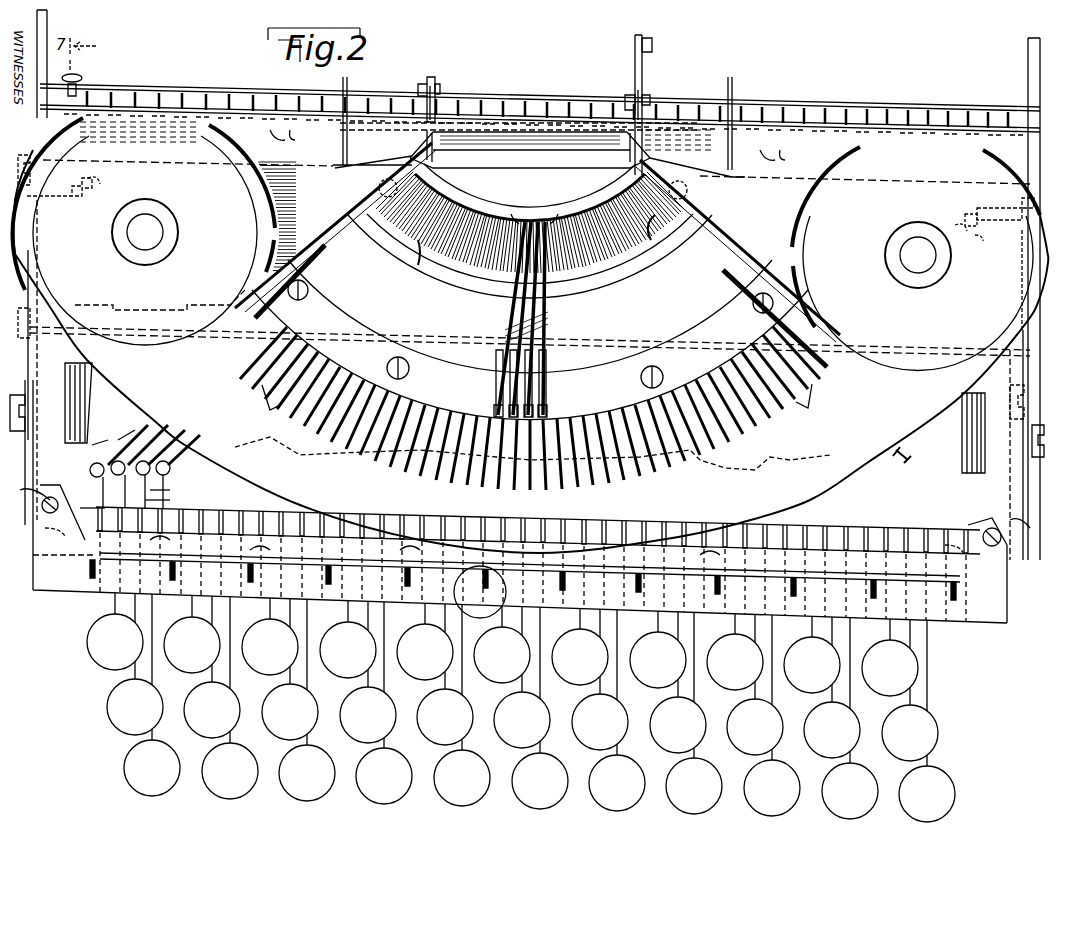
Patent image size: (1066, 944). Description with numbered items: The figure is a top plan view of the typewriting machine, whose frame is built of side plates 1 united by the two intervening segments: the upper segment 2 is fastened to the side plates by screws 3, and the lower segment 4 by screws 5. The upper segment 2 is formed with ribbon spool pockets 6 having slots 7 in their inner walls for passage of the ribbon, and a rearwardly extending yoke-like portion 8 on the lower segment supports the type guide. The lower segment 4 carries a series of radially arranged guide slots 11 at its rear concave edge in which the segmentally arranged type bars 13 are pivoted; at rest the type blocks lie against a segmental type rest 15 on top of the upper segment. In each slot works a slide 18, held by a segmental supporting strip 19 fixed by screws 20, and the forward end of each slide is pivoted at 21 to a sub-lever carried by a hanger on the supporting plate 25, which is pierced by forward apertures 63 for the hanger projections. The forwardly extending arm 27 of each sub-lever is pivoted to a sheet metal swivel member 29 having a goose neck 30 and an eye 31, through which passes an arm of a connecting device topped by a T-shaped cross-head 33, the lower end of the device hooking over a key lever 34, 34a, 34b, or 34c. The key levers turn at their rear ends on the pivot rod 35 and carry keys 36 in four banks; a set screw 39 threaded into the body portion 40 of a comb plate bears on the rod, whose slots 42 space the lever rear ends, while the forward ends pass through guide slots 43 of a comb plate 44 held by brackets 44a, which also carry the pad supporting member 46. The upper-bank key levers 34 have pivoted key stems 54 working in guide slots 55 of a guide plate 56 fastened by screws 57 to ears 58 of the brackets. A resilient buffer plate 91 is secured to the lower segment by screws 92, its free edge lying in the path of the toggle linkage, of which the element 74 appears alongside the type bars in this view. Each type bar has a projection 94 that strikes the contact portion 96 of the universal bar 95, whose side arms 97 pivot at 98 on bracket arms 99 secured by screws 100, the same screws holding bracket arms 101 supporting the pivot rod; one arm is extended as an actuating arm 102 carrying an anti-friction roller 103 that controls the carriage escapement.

The side plates 1 is at (30, 466).
The upper segment 2 is at (531, 351).
The screws 3 is at (532, 282).
The lower segment 4 is at (530, 266).
The screws 5 is at (527, 314).
The ribbon spool pockets 6 is at (533, 253).
The slots 7 is at (820, 239).
The yoke-like portion 8 is at (537, 242).
The guide slots 11 is at (530, 222).
The type bars 13 is at (537, 326).
The type rest 15 is at (358, 368).
The slide 18 is at (154, 433).
The segmental supporting strip 19 is at (551, 237).
The screws 20 is at (688, 190).
The pivot 21 is at (129, 430).
The supporting plate 25 is at (634, 345).
The forwardly extending arm 27 is at (144, 448).
The swivel member 29 is at (98, 455).
The goose neck 30 is at (93, 435).
The eye 31 is at (153, 477).
The cross-head 33 is at (112, 489).
The key lever 34 is at (120, 491).
The key lever 34a is at (92, 507).
The key lever 34b is at (173, 499).
The key lever 34c is at (175, 485).
The pivot rod 35 is at (142, 108).
The keys 36 is at (521, 694).
The set screw 39 is at (84, 79).
The body portion of comb plate 40 is at (240, 90).
The slots 42 is at (527, 140).
The guide slots 43 is at (525, 556).
The comb plate 44 is at (236, 510).
The brackets 44a is at (523, 495).
The supporting member 46 is at (502, 542).
The key stem 54 is at (492, 551).
The guide slot 55 is at (615, 573).
The guide plate 56 is at (64, 560).
The screws 57 is at (521, 505).
The ears 58 is at (523, 502).
The forward apertures 63 is at (911, 455).
The type bar 74 is at (536, 408).
The buffer plate 91 is at (530, 340).
The screws 92 is at (409, 368).
The projection 94 is at (533, 310).
The universal bar 95 is at (530, 197).
The contact portion 96 is at (478, 205).
The side arms 97 is at (436, 110).
The pivot 98 is at (437, 86).
The bracket arms 99 is at (427, 84).
The screws 100 is at (535, 149).
The bracket arms 101 is at (345, 95).
The actuating arm 102 is at (636, 62).
The anti-friction roller 103 is at (665, 40).